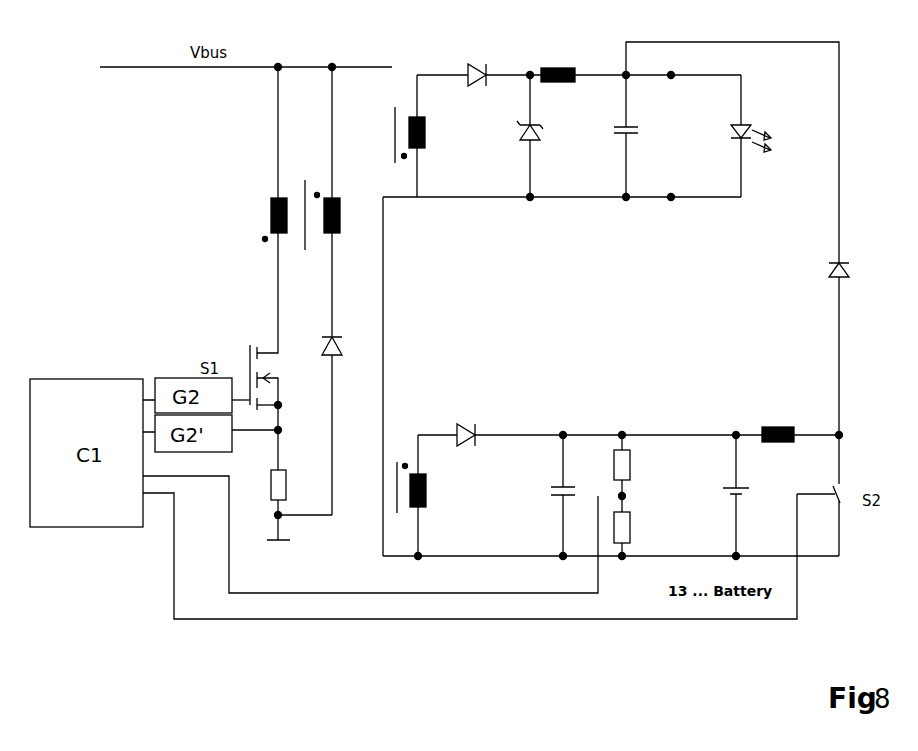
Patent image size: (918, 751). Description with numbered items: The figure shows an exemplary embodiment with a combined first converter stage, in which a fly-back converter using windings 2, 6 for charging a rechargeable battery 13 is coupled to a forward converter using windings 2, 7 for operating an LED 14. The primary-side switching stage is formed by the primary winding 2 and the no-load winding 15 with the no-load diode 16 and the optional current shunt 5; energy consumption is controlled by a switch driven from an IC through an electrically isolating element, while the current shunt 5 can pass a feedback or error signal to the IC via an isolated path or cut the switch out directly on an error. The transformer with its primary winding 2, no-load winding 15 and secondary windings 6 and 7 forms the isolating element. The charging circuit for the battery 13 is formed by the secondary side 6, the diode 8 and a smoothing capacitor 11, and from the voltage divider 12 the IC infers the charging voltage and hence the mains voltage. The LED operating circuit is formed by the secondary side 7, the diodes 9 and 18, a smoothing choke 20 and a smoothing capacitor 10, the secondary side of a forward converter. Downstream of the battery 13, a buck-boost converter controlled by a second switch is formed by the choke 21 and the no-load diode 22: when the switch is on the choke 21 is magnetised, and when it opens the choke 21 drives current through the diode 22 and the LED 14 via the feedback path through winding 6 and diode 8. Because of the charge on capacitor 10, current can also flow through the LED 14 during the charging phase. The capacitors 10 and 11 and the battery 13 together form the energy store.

The primary winding 2 is at (267, 214).
The current shunt 5 is at (273, 460).
The secondary winding 6 is at (421, 487).
The secondary winding 7 is at (419, 135).
The diode 8 is at (466, 422).
The diode 9 is at (477, 61).
The smoothing capacitor 10 is at (636, 136).
The smoothing capacitor 11 is at (570, 495).
The voltage divider 12 is at (635, 495).
The rechargeable battery 13 is at (740, 495).
The LED 14 is at (751, 136).
The no-load winding 15 is at (344, 213).
The no-load diode 16 is at (348, 374).
The diode 18 is at (538, 136).
The smoothing choke 20 is at (558, 59).
The choke 21 is at (778, 423).
The no-load diode 22 is at (814, 271).